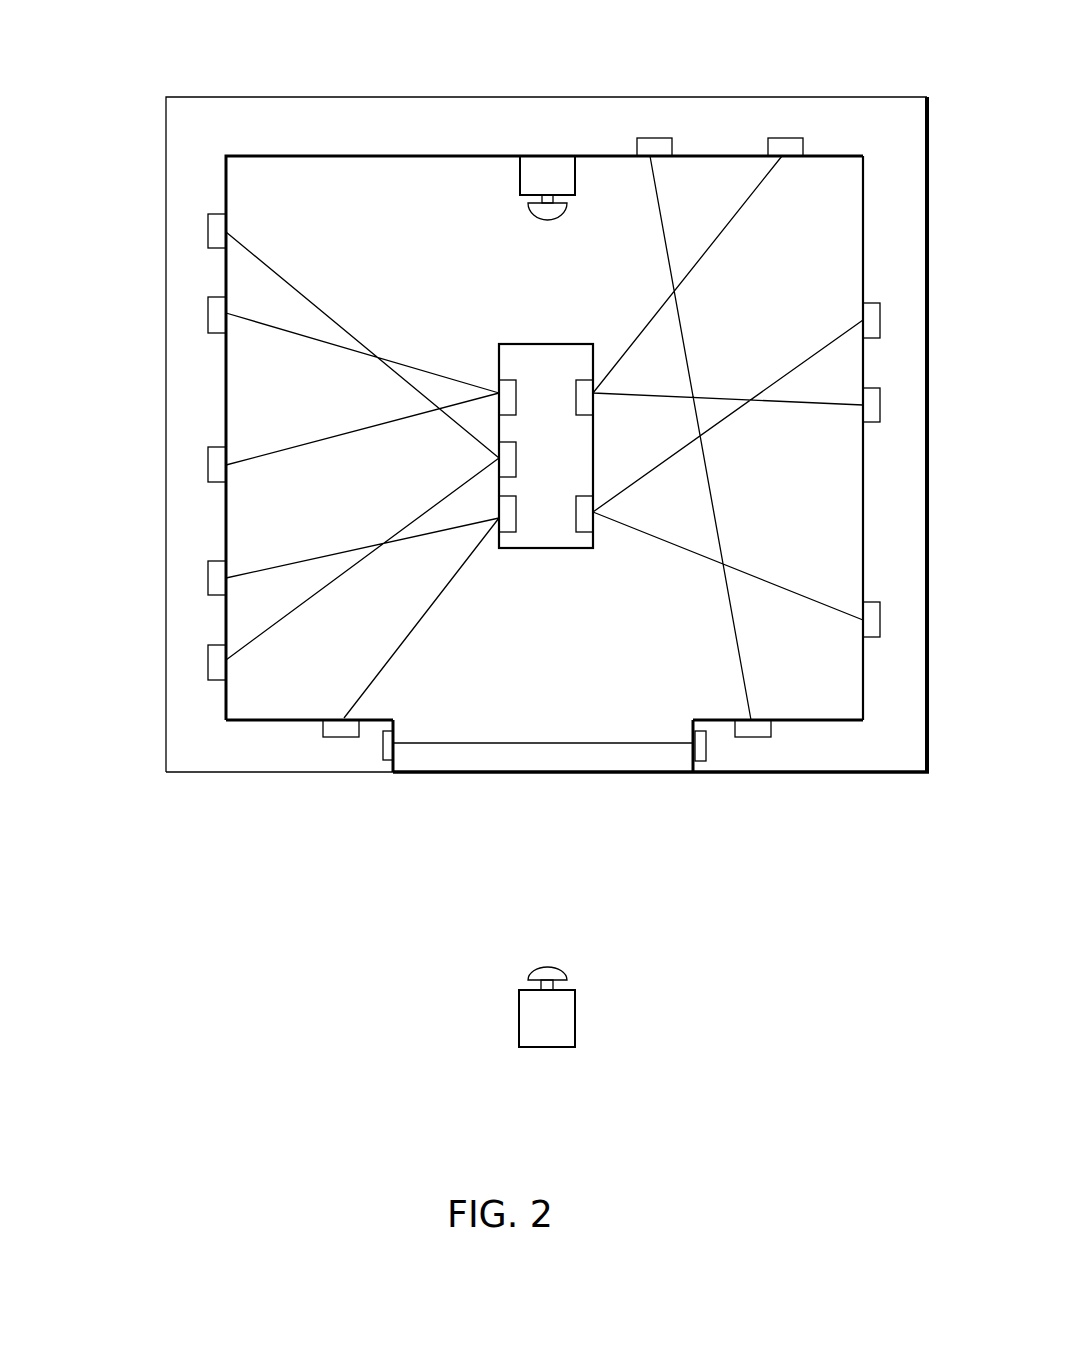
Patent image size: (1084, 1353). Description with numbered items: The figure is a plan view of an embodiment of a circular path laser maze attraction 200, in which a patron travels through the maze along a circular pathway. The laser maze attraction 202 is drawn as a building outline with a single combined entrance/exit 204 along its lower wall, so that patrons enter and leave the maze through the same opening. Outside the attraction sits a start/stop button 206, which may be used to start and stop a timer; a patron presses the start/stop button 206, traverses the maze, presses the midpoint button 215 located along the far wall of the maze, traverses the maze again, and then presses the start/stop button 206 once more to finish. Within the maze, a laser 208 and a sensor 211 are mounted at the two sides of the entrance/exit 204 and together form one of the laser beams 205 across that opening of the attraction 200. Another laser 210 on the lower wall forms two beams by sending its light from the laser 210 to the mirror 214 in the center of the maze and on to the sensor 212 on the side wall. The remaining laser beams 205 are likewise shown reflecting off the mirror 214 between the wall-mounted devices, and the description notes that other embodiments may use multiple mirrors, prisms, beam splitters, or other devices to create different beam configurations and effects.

The circular path laser maze attraction 200 is at (500, 620).
The laser maze attraction 202 is at (820, 773).
The entrance/exit 204 is at (593, 758).
The laser beams 205 is at (358, 563).
The start/stop button 206 is at (530, 967).
The laser 208 is at (382, 750).
The laser 210 is at (337, 737).
The sensor 211 is at (706, 753).
The sensor 212 is at (207, 590).
The mirror 214 is at (517, 512).
The midpoint button 215 is at (528, 212).